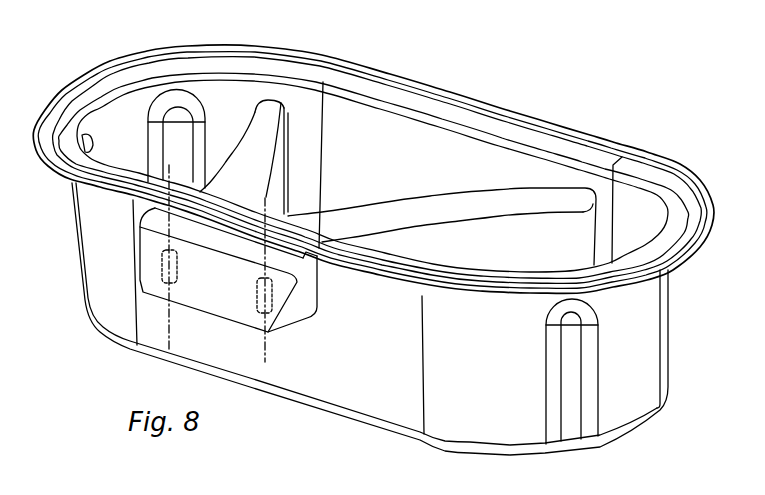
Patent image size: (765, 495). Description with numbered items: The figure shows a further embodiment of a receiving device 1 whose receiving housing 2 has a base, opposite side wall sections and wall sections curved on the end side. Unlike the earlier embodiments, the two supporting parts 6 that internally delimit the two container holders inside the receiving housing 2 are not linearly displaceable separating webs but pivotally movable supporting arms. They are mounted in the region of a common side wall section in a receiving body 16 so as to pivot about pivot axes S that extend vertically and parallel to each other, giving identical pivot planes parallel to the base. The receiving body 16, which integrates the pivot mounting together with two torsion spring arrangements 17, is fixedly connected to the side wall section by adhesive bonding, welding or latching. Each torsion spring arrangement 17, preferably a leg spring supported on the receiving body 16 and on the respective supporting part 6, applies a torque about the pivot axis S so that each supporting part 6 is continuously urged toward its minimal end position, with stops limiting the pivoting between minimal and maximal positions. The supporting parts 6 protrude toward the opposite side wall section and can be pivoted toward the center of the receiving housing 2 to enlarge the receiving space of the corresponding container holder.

The receiving device 1 is at (588, 35).
The receiving housing 2 is at (389, 332).
The supporting part 6 is at (274, 157).
The receiving body 16 is at (307, 297).
The torsion spring arrangement 17 is at (252, 288).
The pivot axis S is at (168, 345).